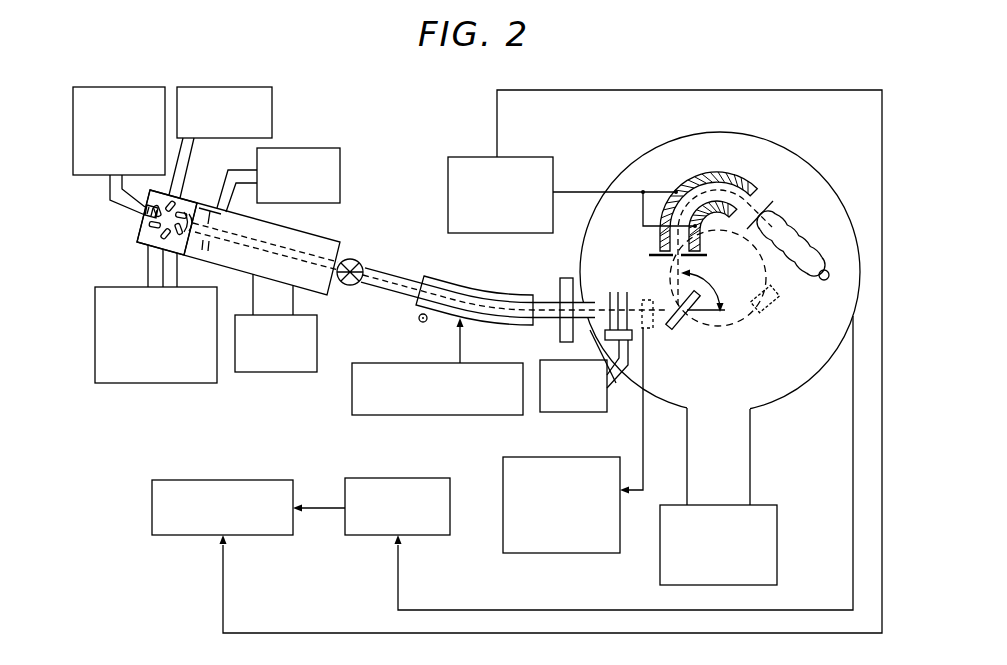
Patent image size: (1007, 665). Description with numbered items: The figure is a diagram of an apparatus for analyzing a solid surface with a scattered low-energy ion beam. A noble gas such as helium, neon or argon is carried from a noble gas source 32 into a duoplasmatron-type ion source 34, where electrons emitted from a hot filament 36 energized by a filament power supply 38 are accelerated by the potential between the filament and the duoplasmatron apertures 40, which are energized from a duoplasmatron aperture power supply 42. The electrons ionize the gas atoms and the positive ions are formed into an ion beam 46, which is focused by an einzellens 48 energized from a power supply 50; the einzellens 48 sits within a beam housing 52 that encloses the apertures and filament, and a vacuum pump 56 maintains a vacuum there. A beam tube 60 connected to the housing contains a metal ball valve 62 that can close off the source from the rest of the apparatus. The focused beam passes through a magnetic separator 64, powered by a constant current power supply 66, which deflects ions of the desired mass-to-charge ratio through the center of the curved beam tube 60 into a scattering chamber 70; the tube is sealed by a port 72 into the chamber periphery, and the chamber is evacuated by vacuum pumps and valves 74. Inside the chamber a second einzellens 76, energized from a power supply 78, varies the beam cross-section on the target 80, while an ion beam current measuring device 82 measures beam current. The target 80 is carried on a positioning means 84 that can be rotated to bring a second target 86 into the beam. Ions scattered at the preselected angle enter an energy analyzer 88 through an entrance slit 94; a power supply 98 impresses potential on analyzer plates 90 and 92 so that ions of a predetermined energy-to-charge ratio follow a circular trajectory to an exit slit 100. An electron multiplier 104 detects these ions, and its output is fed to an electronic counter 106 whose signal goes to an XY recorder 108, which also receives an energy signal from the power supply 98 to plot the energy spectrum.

The noble gas source 32 is at (204, 87).
The ion source 34 is at (137, 242).
The filament 36 is at (145, 216).
The filament power supply 38 is at (128, 87).
The duoplasmatron apertures 40 is at (186, 198).
The duoplasmatron aperture power supply 42 is at (158, 383).
The ion beam 46 is at (288, 256).
The einzellens 48 is at (217, 246).
The power supply 50 is at (289, 148).
The beam housing 52 is at (308, 235).
The vacuum pump 56 is at (291, 372).
The beam tube 60 is at (387, 290).
The metal ball valve 62 is at (352, 259).
The magnetic separator 64 is at (490, 290).
The constant current power supply 66 is at (437, 415).
The scattering chamber 70 is at (804, 160).
The port 72 is at (566, 278).
The vacuum pumps and valves 74 is at (777, 550).
The second einzellens 76 is at (607, 300).
The power supply 78 is at (566, 412).
The target 80 is at (688, 323).
The ion beam current measuring device 82 is at (572, 553).
The positioning means 84 is at (727, 327).
The second target 86 is at (783, 298).
The energy analyzer 88 is at (709, 199).
The analyzer plate 90 is at (693, 188).
The analyzer plate 92 is at (712, 212).
The entrance slit 94 is at (663, 260).
The power supply 98 is at (478, 157).
The exit slit 100 is at (775, 204).
The electron multiplier 104 is at (799, 236).
The electronic counter 106 is at (412, 478).
The XY recorder 108 is at (238, 480).